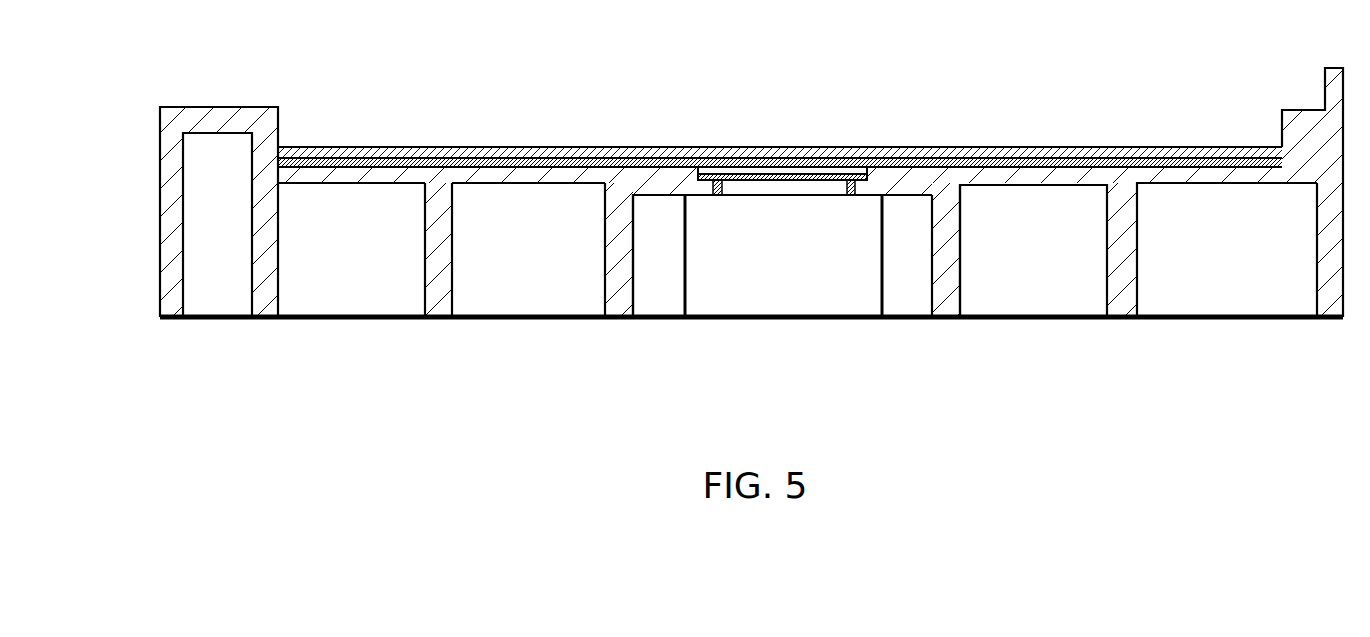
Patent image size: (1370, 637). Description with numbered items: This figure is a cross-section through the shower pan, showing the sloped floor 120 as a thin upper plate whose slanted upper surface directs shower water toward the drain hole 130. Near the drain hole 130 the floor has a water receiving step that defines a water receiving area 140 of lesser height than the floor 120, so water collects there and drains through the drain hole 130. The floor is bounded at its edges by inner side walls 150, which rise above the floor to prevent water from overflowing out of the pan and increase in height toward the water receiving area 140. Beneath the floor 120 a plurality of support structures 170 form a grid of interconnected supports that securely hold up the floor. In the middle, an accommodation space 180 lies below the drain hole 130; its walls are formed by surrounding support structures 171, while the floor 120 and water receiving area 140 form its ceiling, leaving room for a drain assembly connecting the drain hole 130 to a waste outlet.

The sloped floor 120 is at (910, 147).
The drain hole 130 is at (737, 175).
The water receiving area 140 is at (1022, 178).
The inner side walls 150 is at (1326, 90).
The support structures 170 is at (443, 273).
The surrounding support structures 171 is at (613, 288).
The accommodation space 180 is at (823, 280).